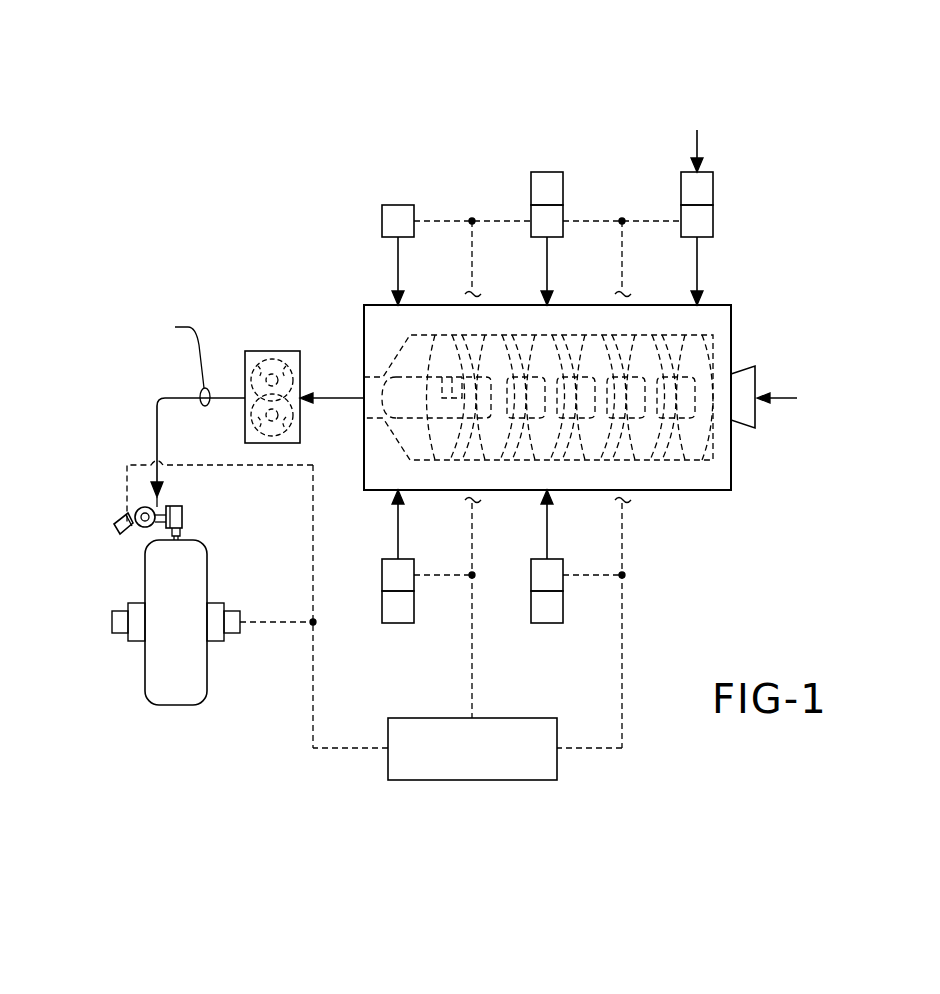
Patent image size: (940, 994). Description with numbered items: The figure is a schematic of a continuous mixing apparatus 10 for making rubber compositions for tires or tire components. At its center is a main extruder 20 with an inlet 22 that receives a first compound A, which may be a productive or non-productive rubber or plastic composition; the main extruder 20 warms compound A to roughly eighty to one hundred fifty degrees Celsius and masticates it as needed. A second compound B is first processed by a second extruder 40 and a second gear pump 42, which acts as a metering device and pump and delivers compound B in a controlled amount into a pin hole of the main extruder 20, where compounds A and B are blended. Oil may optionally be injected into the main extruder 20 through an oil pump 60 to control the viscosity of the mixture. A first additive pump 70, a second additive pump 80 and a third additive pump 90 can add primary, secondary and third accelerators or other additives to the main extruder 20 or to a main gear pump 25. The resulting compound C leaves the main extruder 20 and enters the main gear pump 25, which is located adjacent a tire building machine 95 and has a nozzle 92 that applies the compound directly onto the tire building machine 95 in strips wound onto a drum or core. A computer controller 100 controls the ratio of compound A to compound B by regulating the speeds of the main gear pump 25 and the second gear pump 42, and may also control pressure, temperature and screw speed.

The continuous mixing apparatus 10 is at (185, 258).
The main extruder 20 is at (718, 305).
The inlet 22 is at (748, 368).
The main gear pump 25 is at (278, 351).
The second extruder 40 is at (713, 184).
The second gear pump 42 is at (713, 219).
The oil pump 60 is at (382, 221).
The first additive pump 70 is at (552, 166).
The second additive pump 80 is at (563, 568).
The third additive pump 90 is at (398, 623).
The nozzle 92 is at (182, 511).
The tire building machine 95 is at (137, 642).
The computer controller 100 is at (412, 718).